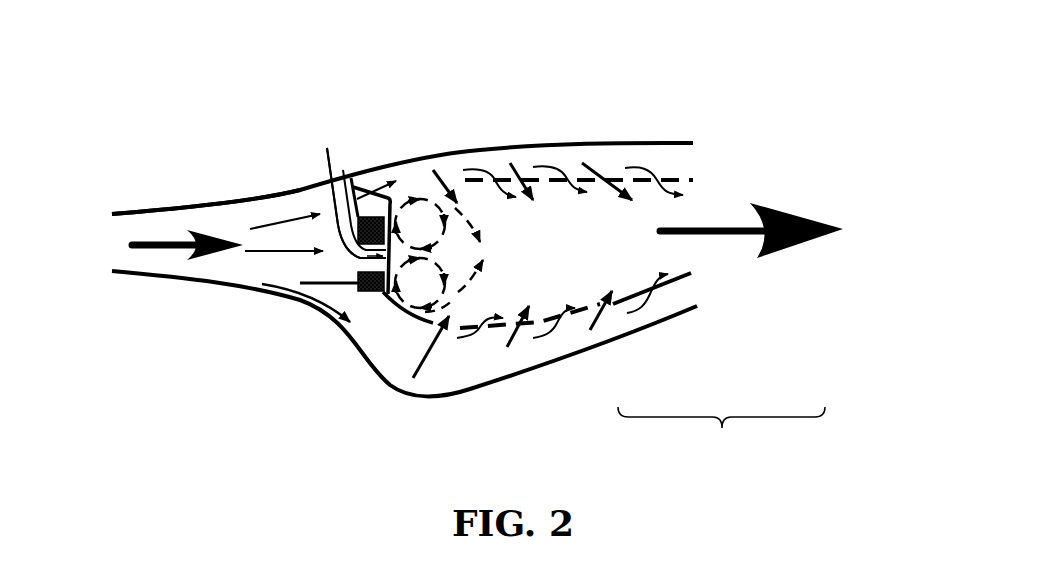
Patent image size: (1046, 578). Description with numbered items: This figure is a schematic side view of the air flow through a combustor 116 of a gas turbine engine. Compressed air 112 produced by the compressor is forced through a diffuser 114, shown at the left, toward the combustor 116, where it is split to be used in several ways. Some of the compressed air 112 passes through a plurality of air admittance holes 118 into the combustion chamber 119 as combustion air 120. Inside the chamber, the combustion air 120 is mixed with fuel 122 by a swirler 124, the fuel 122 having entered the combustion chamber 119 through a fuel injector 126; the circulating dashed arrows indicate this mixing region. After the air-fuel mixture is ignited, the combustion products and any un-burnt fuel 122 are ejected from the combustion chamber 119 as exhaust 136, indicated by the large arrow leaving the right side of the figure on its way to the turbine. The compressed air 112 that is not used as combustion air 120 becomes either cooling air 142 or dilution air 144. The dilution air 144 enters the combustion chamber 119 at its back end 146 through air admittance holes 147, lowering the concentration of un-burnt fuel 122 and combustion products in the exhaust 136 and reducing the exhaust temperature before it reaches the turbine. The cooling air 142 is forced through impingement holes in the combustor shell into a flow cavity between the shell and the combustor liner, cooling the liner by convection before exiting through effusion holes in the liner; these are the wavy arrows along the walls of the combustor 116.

The compressed air 112 is at (298, 294).
The diffuser 114 is at (133, 230).
The combustor 116 is at (558, 101).
The air admittance holes 118 is at (443, 312).
The combustion chamber 119 is at (547, 258).
The combustion air 120 is at (282, 253).
The fuel 122 is at (331, 151).
The swirler 124 is at (374, 284).
The fuel injector 126 is at (337, 233).
The exhaust 136 is at (745, 236).
The cooling air 142 is at (470, 337).
The dilution air 144 is at (611, 297).
The back end 146 is at (721, 438).
The air admittance holes 147 is at (617, 304).